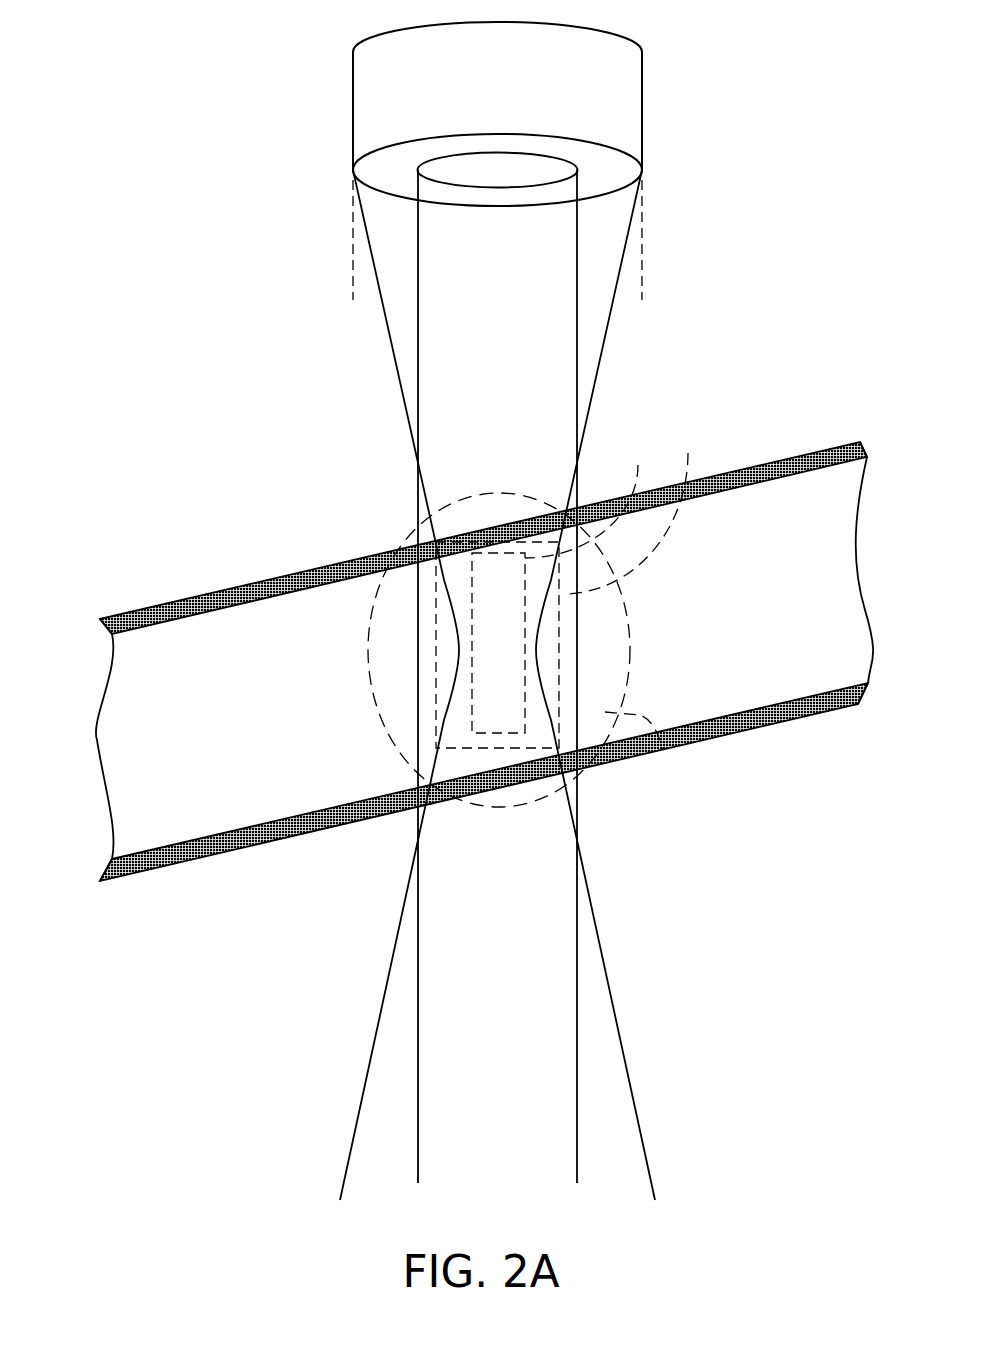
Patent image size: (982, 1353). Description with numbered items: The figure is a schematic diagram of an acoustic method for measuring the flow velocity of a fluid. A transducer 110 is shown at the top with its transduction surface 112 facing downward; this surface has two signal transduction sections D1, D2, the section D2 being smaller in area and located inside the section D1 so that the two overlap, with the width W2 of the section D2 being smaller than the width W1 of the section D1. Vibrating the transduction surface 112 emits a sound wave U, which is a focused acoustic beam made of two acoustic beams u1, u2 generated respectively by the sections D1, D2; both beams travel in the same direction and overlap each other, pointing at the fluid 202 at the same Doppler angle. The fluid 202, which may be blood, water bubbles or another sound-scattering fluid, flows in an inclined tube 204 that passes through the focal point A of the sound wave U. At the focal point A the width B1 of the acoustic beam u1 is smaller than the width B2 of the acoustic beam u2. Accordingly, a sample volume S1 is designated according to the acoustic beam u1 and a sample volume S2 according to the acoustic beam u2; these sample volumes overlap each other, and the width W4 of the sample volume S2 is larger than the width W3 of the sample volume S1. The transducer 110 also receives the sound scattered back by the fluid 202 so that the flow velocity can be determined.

The transducer 110 is at (627, 102).
The transduction surface 112 is at (559, 191).
The signal transduction section D1 is at (605, 168).
The signal transduction section D2 is at (527, 172).
The sound wave U is at (460, 685).
The acoustic beam u1 is at (390, 330).
The acoustic beam u2 is at (417, 367).
The width of the signal transduction section D1 W1 is at (353, 287).
The width of the signal transduction section D2 W2 is at (418, 248).
The width of the sample volume S1 W3 is at (472, 585).
The width of the sample volume S2 W4 is at (436, 623).
The width of the acoustic beam U1 B1 is at (459, 652).
The width of the acoustic beam U2 B2 is at (418, 707).
The sample volume S1 is at (587, 493).
The sample volume S2 is at (631, 507).
The focal point A is at (671, 762).
The fluid 202 is at (752, 672).
The tube 204 is at (820, 700).